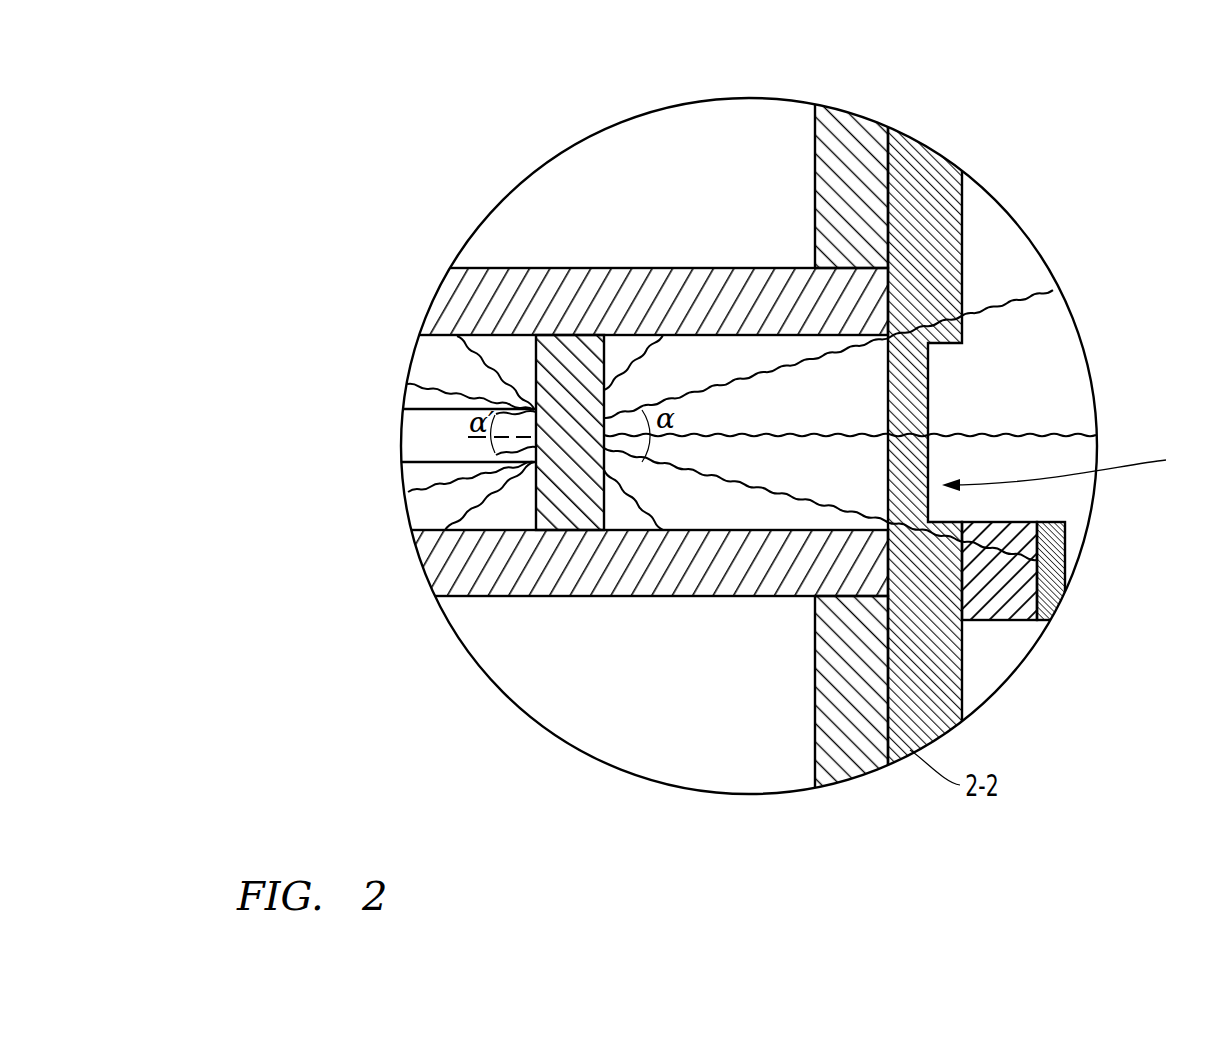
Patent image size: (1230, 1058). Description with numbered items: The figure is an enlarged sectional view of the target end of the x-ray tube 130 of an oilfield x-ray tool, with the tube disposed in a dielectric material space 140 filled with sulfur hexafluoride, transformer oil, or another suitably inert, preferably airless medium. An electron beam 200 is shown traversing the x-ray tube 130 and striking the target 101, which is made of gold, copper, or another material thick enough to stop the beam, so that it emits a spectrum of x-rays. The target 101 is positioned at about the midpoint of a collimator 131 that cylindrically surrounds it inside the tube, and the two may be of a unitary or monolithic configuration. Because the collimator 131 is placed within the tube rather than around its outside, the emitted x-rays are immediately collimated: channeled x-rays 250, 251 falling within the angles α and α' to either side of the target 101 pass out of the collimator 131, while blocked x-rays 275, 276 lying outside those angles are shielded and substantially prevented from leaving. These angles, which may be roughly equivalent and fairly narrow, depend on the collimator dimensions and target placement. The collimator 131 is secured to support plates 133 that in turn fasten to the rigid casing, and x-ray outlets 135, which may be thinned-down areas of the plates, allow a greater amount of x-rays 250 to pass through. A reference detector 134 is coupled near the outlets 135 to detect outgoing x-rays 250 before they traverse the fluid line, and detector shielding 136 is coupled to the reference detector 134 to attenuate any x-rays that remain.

The target 101 is at (548, 497).
The x-ray tube 130 is at (413, 439).
The collimator 131 is at (593, 584).
The support plates 133 is at (923, 165).
The reference detector 134 is at (1000, 602).
The x-ray outlets 135 is at (1076, 466).
The detector shielding 136 is at (1053, 578).
The dielectric material space 140 is at (692, 768).
The electron beam 200 is at (478, 433).
The channeled x-rays 250 is at (1018, 288).
The channeled x-rays 251 is at (427, 390).
The blocked x-rays 275 is at (641, 358).
The blocked x-rays 276 is at (453, 352).